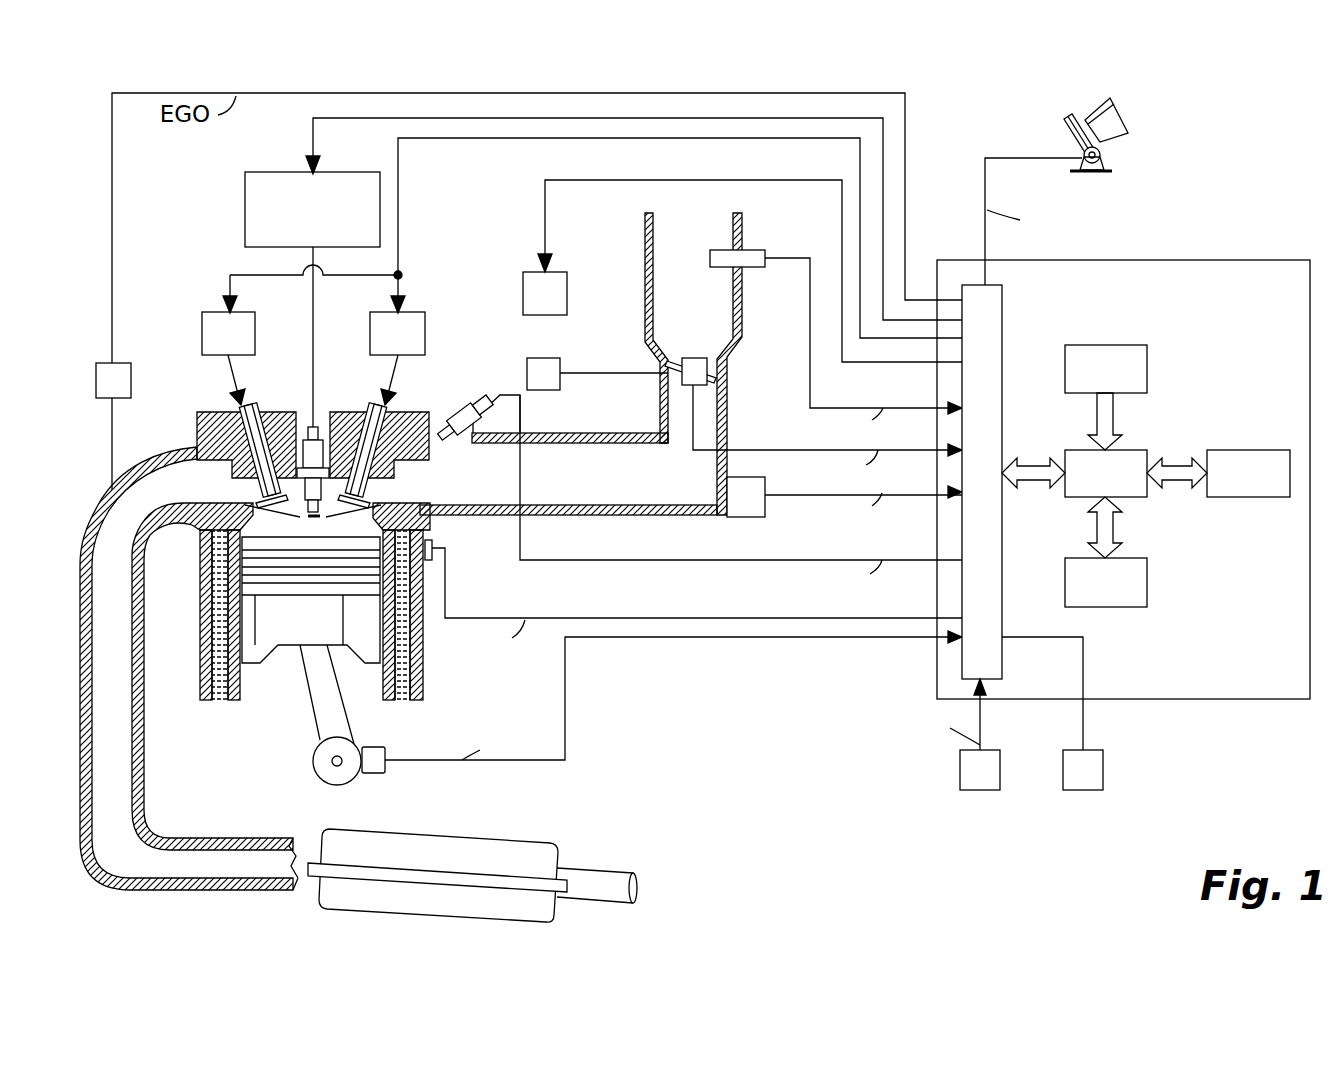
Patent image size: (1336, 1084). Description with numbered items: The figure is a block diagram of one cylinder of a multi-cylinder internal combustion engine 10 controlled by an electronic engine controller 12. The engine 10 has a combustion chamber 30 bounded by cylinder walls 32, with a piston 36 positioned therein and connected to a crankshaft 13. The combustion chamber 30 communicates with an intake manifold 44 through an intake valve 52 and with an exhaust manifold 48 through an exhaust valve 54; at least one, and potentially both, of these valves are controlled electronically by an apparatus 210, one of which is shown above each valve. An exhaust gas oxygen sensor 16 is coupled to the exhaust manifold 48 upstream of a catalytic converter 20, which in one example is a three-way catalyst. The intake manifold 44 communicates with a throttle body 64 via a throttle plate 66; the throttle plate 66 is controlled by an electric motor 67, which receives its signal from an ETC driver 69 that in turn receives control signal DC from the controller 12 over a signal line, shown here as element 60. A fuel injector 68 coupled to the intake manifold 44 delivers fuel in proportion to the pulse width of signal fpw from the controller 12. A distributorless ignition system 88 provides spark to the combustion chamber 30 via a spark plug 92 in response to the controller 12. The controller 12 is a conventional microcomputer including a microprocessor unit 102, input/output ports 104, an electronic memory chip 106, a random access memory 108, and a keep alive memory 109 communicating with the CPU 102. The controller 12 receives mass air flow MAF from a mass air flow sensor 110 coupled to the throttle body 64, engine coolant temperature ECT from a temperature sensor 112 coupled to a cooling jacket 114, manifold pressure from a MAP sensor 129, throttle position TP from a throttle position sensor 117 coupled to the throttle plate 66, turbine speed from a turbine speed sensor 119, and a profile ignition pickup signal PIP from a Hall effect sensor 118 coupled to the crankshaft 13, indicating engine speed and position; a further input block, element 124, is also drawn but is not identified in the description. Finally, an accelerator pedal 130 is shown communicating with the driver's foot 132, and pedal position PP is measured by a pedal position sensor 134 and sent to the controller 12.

The internal combustion engine 10 is at (228, 793).
The electronic engine controller 12 is at (1126, 464).
The crankshaft 13 is at (338, 773).
The exhaust gas oxygen sensor 16 is at (112, 363).
The catalytic converter 20 is at (520, 845).
The combustion chamber 30 is at (300, 525).
The cylinder walls 32 is at (243, 700).
The piston 36 is at (313, 633).
The intake manifold 44 is at (568, 455).
The exhaust manifold 48 is at (122, 668).
The intake valve 52 is at (358, 500).
The exhaust valve 54 is at (255, 500).
The throttle control signal line 60 is at (685, 180).
The throttle body 64 is at (730, 238).
The throttle plate 66 is at (690, 368).
The electric motor 67 is at (555, 365).
The fuel injector 68 is at (463, 416).
The ETC driver 69 is at (555, 272).
The distributorless ignition system 88 is at (338, 172).
The spark plug 92 is at (316, 427).
The microprocessor unit 102 is at (1130, 450).
The input/output ports 104 is at (1005, 328).
The electronic memory chip 106 is at (1105, 345).
The random access memory 108 is at (1125, 558).
The keep alive memory 109 is at (1240, 450).
The mass air flow sensor 110 is at (762, 252).
The temperature sensor 112 is at (432, 545).
The cooling jacket 114 is at (423, 670).
The throttle position sensor 117 is at (697, 358).
The Hall effect sensor 118 is at (380, 747).
The turbine speed sensor 119 is at (998, 752).
The sensor input 124 is at (1102, 752).
The MAP sensor 129 is at (740, 520).
The accelerator pedal 130 is at (1092, 181).
The driver's foot 132 is at (1118, 120).
The pedal position sensor 134 is at (1100, 160).
The apparatus 210 is at (313, 358).